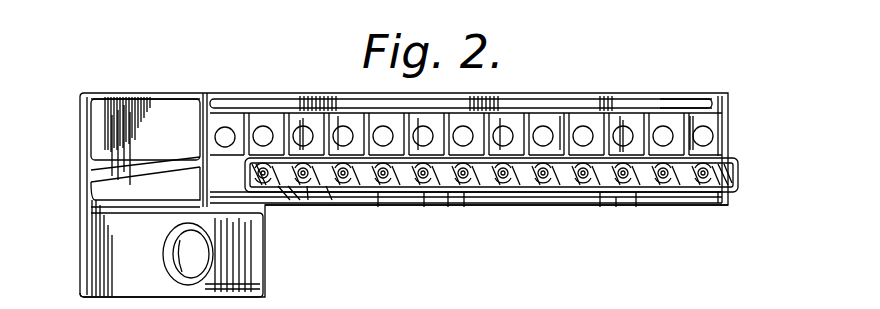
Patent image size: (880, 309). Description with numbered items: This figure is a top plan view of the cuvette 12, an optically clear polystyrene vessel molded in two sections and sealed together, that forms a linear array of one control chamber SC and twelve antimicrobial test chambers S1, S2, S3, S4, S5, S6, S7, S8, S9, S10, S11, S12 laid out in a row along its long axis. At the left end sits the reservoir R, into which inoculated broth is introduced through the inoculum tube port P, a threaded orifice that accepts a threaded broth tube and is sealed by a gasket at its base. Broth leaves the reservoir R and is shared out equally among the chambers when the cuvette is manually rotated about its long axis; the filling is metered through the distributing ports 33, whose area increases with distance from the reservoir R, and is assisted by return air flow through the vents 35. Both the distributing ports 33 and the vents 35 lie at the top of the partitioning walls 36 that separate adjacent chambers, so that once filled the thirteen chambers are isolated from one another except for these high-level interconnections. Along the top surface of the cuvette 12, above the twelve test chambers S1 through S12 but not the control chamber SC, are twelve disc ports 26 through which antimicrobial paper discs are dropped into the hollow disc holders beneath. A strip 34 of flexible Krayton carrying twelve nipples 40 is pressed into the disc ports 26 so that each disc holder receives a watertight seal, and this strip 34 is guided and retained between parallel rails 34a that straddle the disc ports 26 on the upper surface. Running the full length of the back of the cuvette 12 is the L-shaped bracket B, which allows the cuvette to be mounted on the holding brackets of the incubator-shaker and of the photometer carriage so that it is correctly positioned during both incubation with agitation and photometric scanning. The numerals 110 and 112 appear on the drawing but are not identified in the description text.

The switch housing frame 110 is at (728, 134).
The housing side block 112 is at (80, 246).
The reservoir R is at (103, 133).
The inoculum tube port P is at (266, 238).
The L-shaped bracket B is at (621, 108).
The distributing ports 33 is at (705, 100).
The strip 34 is at (718, 172).
The parallel rails 34a is at (452, 195).
The vents 35 is at (637, 205).
The partitioning walls 36 is at (576, 205).
The disc ports 26 is at (420, 196).
The nipples 40 is at (312, 194).
The cuvette 12 is at (700, 208).
The control chamber SC is at (226, 125).
The antimicrobial test chamber S1 is at (262, 124).
The antimicrobial test chamber S2 is at (303, 124).
The antimicrobial test chamber S3 is at (343, 124).
The antimicrobial test chamber S4 is at (383, 124).
The antimicrobial test chamber S5 is at (424, 124).
The antimicrobial test chamber S6 is at (464, 124).
The antimicrobial test chamber S7 is at (503, 124).
The antimicrobial test chamber S8 is at (543, 124).
The antimicrobial test chamber S9 is at (583, 124).
The antimicrobial test chamber S10 is at (623, 124).
The antimicrobial test chamber S11 is at (663, 124).
The antimicrobial test chamber S12 is at (712, 122).